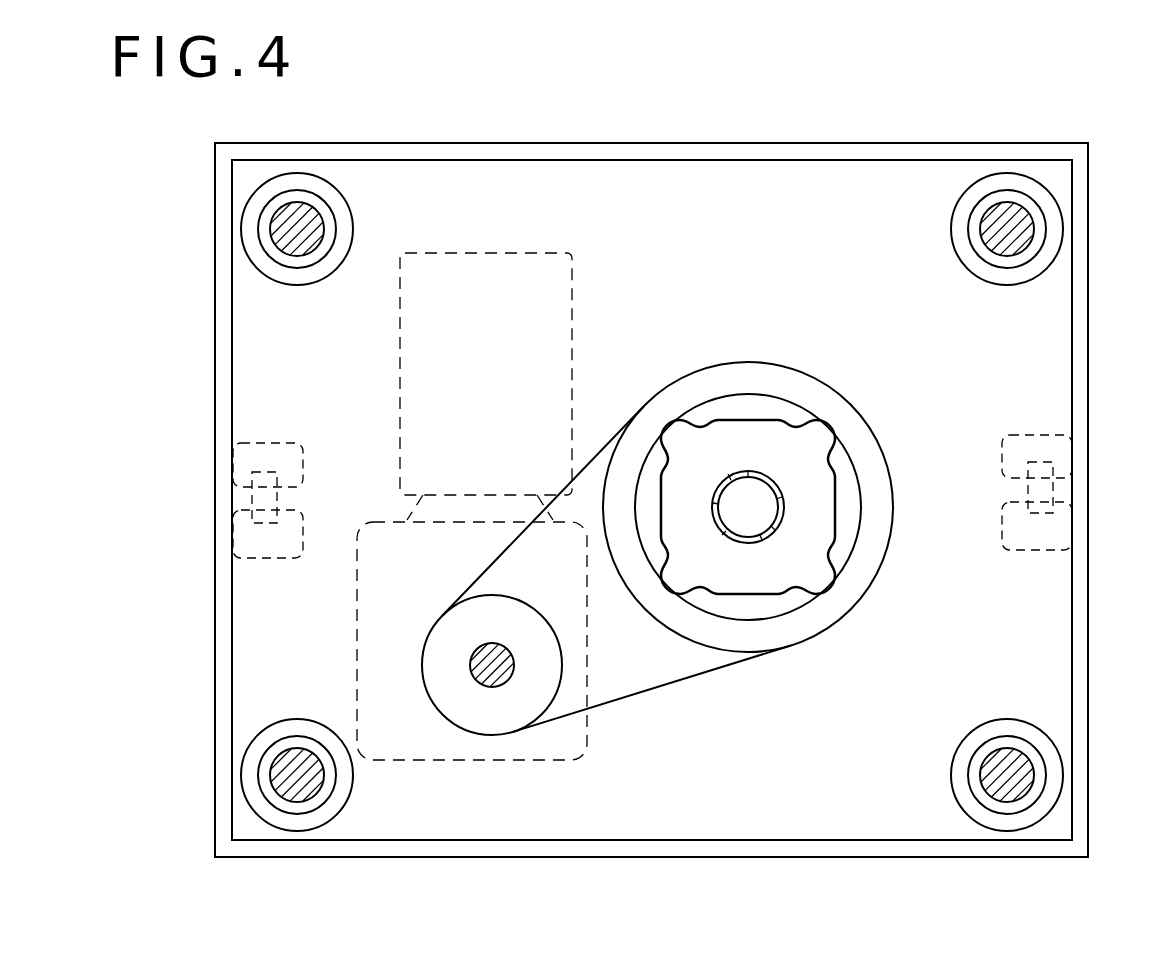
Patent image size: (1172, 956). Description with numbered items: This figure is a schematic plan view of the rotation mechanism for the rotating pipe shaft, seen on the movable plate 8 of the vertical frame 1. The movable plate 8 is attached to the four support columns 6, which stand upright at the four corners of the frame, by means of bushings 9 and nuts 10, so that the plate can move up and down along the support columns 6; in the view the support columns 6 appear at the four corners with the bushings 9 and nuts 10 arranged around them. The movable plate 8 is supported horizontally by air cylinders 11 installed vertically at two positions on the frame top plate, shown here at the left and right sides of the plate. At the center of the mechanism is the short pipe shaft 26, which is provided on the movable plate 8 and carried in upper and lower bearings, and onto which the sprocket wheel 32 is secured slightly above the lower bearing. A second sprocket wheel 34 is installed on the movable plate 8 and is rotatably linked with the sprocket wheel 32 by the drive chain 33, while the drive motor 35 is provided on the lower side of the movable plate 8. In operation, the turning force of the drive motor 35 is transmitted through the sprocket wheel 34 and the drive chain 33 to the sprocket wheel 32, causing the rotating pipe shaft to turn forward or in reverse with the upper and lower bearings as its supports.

The vertical frame 1 is at (875, 143).
The support columns 6 is at (272, 237).
The movable plate 8 is at (822, 818).
The bushings 9 is at (1030, 192).
The nuts 10 is at (1002, 172).
The air cylinders 11 is at (233, 462).
The short pipe shaft 26 is at (782, 515).
The sprocket wheel 32 is at (752, 385).
The drive chain 33 is at (702, 672).
The sprocket wheel 34 is at (512, 735).
The drive motor 35 is at (428, 752).